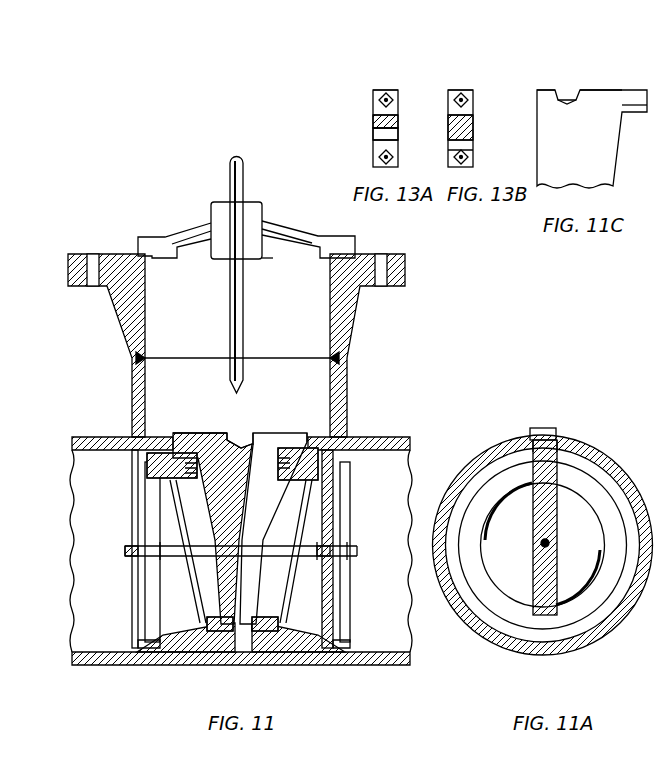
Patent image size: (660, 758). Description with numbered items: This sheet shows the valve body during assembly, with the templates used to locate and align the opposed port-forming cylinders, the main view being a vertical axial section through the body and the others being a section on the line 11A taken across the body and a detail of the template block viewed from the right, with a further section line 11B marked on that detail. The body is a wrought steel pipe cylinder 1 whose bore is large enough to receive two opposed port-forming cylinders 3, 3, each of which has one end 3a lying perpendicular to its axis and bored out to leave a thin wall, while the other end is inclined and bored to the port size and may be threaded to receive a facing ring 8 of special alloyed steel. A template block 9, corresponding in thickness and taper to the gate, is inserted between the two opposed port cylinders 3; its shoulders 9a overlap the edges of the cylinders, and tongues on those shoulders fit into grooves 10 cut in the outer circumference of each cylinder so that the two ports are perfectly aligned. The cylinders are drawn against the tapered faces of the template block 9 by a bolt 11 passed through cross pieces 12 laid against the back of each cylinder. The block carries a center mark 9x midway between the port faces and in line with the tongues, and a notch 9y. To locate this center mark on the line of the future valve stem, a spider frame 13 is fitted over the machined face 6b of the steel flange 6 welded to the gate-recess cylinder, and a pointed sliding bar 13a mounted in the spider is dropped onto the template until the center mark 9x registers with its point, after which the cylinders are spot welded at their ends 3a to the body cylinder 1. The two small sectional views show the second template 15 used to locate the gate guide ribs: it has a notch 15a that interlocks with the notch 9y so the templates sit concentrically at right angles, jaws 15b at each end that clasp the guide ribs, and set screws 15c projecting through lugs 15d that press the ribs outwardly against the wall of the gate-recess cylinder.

In FIG. 11A, the valve-body cylinder 1 is at (605, 455).
In FIG. 11, the port-forming cylinder 3 is at (241, 566).
In FIG. 11A, the port-forming cylinder 3 is at (543, 545).
In FIG. 11, the end of port-forming cylinder 3a is at (132, 608).
In FIG. 11, the flange 6 is at (405, 268).
In FIG. 11, the machined face 6b is at (267, 261).
In FIG. 11, the facing ring 8 is at (191, 494).
In FIG. 11, the template block 9 is at (240, 528).
In FIG. 11A, the template block 9 is at (533, 524).
In FIG. 11C, the template block 9 is at (650, 112).
In FIG. 11, the shoulder 9a is at (318, 433).
In FIG. 11C, the shoulder 9a is at (626, 90).
In FIG. 11, the center mark 9x is at (240, 446).
In FIG. 11A, the center mark 9x is at (537, 440).
In FIG. 11C, the center mark 9x is at (570, 104).
In FIG. 11, the notch 9y is at (243, 447).
In FIG. 11A, the notch 9y is at (553, 440).
In FIG. 11C, the notch 9y is at (556, 94).
In FIG. 11, the groove 10 is at (184, 434).
In FIG. 11, the bolt 11 is at (126, 549).
In FIG. 11, the section line 11A— 11A is at (235, 148).
In FIG. 11C, the section line 11A— 11A is at (568, 198).
In FIG. 11C, the section line 11B— 11B is at (635, 138).
In FIG. 11, the cross piece 12 is at (138, 502).
In FIG. 11, the spider frame 13 is at (303, 230).
In FIG. 11, the sliding bar 13a is at (244, 333).
In FIG. 11A, the template 15 is at (592, 397).
In FIG. 13A, the template 15 is at (372, 114).
In FIG. 13B, the template 15 is at (448, 129).
In FIG. 13A, the notch 15a is at (372, 137).
In FIG. 11A, the jaw 15b is at (644, 646).
In FIG. 13A, the set screw 15c is at (394, 101).
In FIG. 13B, the set screw 15c is at (453, 101).
In FIG. 13A, the lug 15d is at (390, 90).
In FIG. 13B, the lug 15d is at (453, 90).